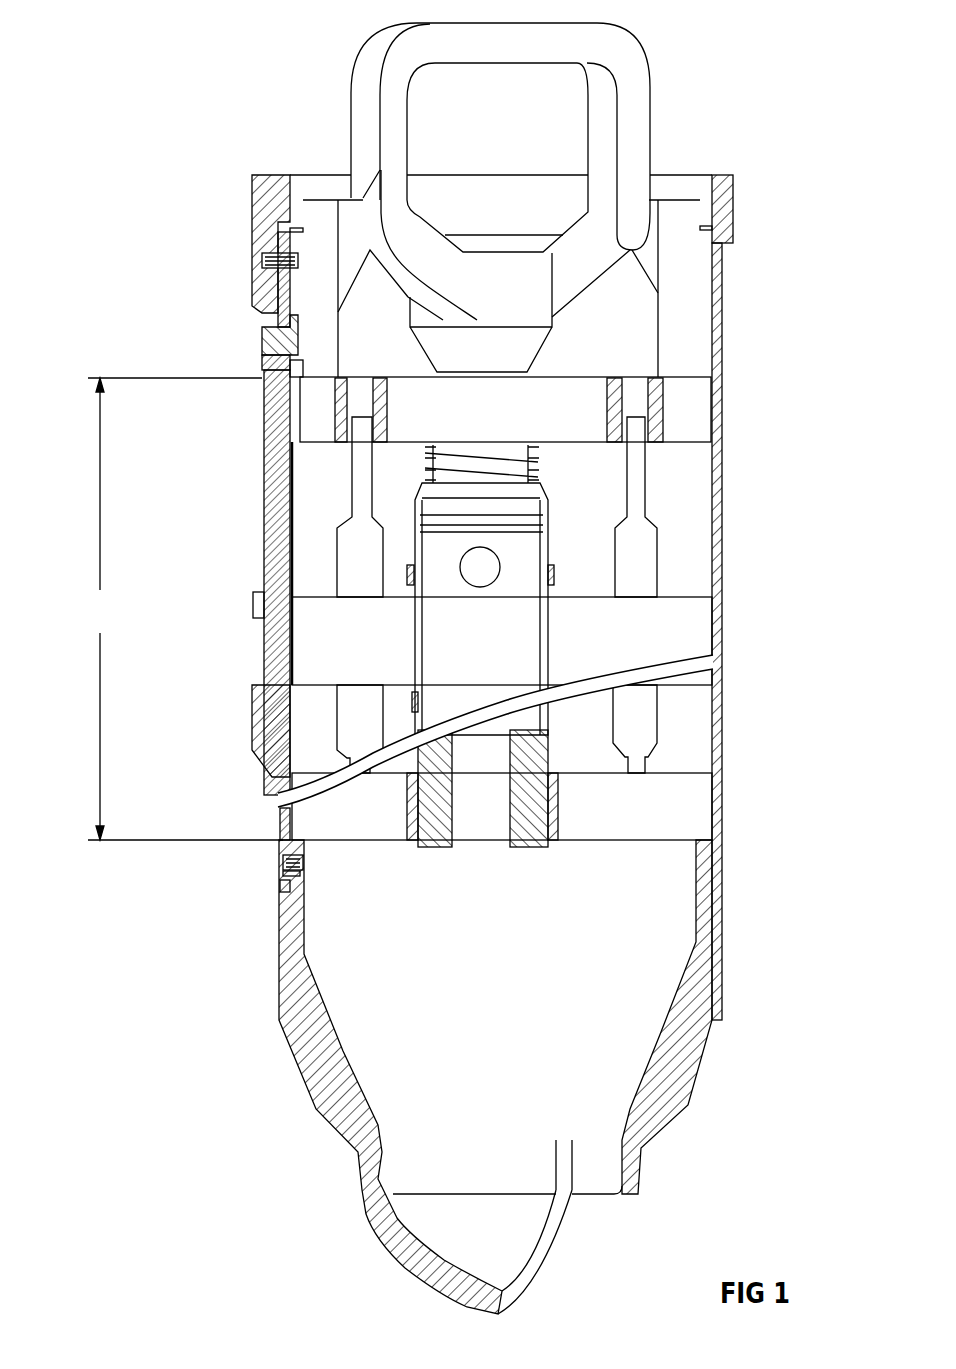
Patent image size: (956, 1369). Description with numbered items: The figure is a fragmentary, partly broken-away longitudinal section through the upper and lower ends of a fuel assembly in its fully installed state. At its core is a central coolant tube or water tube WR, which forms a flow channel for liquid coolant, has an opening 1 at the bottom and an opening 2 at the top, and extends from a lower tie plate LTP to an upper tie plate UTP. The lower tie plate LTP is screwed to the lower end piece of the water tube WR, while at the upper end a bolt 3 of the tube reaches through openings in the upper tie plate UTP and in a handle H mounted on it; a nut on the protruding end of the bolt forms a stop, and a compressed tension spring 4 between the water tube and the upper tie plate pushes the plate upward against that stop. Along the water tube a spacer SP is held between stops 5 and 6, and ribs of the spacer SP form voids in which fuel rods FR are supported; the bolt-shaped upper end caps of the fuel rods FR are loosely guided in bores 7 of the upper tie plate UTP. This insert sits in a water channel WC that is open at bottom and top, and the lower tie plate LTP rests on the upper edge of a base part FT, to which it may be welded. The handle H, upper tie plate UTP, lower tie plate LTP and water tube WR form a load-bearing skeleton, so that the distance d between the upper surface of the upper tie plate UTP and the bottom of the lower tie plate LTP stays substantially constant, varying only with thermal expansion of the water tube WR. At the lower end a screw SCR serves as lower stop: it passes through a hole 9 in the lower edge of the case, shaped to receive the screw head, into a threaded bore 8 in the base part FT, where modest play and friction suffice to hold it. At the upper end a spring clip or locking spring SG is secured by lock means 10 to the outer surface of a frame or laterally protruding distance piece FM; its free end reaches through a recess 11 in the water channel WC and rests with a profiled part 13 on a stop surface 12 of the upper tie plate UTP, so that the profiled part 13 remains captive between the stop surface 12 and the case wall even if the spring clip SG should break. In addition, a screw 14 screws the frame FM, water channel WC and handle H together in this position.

The frame or laterally protruding distance piece FM is at (268, 195).
The screw 14 is at (262, 258).
The profiled part 13 is at (297, 338).
The stop surface 12 is at (296, 368).
The recess 11 is at (262, 357).
The spring clip or locking spring SG is at (266, 442).
The water channel WC is at (723, 466).
The handle H is at (522, 343).
The upper tie plate UTP is at (690, 420).
The bores 7 is at (640, 393).
The fuel rods FR is at (650, 548).
The bolt 3 is at (422, 464).
The compressed tension spring 4 is at (540, 466).
The water tube WR is at (548, 543).
The opening 2 is at (494, 582).
The stop 5 is at (411, 586).
The stop 6 is at (411, 698).
The lock means 10 is at (253, 600).
The spacer SP is at (685, 623).
The lower tie plate LTP is at (688, 808).
The opening 1 is at (486, 850).
The screw SCR is at (283, 862).
The threaded bore 8 is at (300, 873).
The hole 9 is at (280, 888).
The base part FT is at (708, 966).
The distance d is at (185, 609).